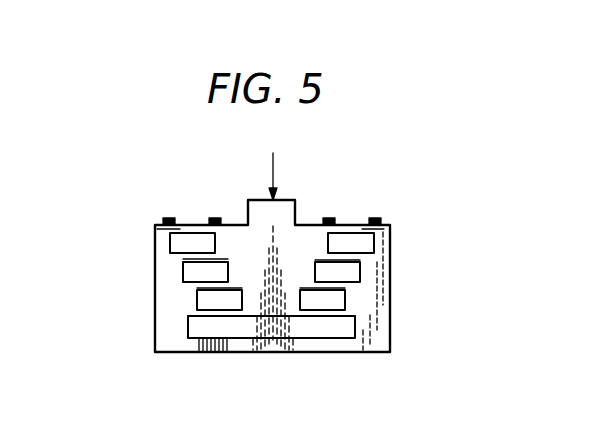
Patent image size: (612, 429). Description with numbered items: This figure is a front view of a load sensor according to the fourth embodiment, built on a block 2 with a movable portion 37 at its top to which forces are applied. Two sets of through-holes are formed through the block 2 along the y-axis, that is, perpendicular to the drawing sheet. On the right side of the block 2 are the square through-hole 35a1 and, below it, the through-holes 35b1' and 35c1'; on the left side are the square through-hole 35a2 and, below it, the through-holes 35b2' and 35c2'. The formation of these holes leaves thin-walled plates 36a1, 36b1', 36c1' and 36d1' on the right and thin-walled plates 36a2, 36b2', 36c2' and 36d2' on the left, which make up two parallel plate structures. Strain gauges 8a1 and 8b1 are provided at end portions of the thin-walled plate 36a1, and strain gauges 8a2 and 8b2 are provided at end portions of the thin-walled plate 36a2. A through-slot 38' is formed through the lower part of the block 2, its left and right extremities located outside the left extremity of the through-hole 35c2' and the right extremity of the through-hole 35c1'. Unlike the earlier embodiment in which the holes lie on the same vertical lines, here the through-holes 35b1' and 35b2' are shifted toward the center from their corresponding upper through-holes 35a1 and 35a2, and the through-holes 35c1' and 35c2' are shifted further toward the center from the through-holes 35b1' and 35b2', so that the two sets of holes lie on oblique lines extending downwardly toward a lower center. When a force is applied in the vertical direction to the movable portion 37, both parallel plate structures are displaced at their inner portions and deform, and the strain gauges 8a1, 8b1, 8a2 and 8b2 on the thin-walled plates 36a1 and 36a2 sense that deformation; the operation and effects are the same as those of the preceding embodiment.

The block 2 is at (312, 353).
The movable portion 37 is at (293, 199).
The strain gauge 8a2 is at (168, 217).
The strain gauge 8b2 is at (215, 217).
The strain gauge 8b1 is at (329, 217).
The strain gauge 8a1 is at (375, 217).
The thin-walled plate 36a2 is at (157, 228).
The square through-hole 35a2 is at (178, 243).
The thin-walled plate 36b2' is at (149, 271).
The through-hole 35b2' is at (149, 284).
The thin-walled plate 36c2' is at (156, 309).
The through-hole 35c2' is at (156, 322).
The thin-walled plate 36d2' is at (155, 347).
The thin-walled plate 36a1 is at (392, 227).
The square through-hole 35a1 is at (373, 246).
The thin-walled plate 36b1' is at (399, 261).
The through-hole 35b1' is at (399, 279).
The thin-walled plate 36c1' is at (391, 302).
The through-hole 35c1' is at (391, 317).
The thin-walled plate 36d1' is at (392, 344).
The through-slot 38' is at (256, 358).